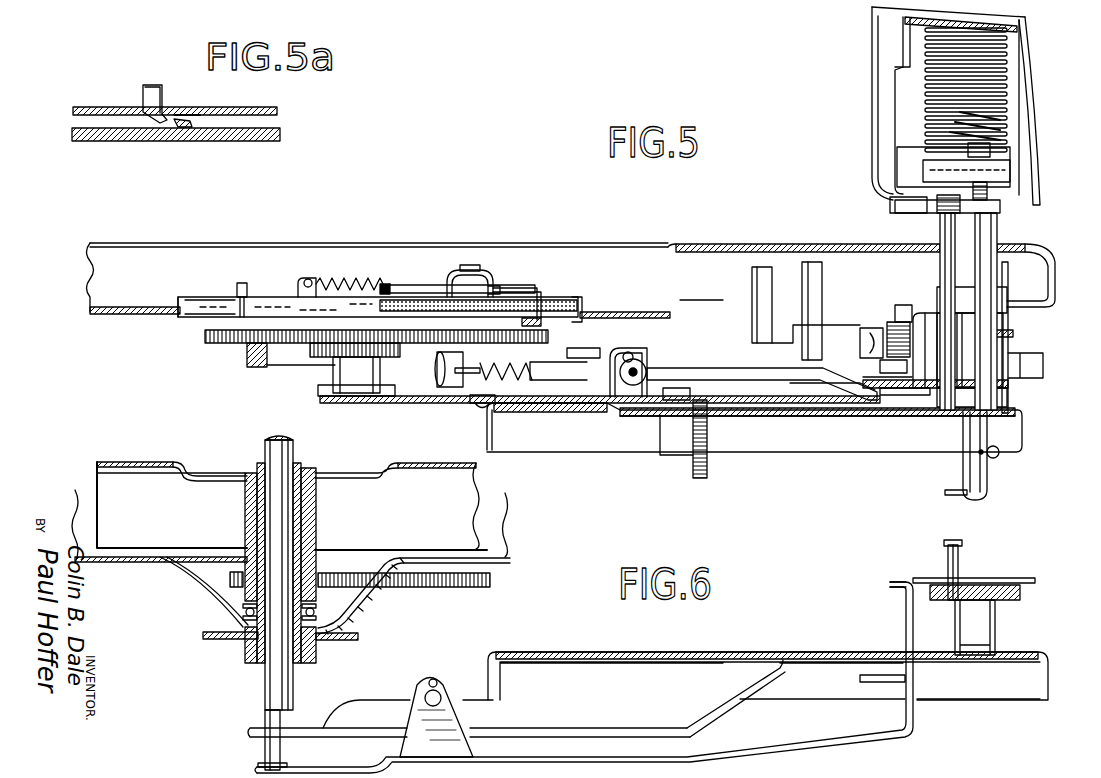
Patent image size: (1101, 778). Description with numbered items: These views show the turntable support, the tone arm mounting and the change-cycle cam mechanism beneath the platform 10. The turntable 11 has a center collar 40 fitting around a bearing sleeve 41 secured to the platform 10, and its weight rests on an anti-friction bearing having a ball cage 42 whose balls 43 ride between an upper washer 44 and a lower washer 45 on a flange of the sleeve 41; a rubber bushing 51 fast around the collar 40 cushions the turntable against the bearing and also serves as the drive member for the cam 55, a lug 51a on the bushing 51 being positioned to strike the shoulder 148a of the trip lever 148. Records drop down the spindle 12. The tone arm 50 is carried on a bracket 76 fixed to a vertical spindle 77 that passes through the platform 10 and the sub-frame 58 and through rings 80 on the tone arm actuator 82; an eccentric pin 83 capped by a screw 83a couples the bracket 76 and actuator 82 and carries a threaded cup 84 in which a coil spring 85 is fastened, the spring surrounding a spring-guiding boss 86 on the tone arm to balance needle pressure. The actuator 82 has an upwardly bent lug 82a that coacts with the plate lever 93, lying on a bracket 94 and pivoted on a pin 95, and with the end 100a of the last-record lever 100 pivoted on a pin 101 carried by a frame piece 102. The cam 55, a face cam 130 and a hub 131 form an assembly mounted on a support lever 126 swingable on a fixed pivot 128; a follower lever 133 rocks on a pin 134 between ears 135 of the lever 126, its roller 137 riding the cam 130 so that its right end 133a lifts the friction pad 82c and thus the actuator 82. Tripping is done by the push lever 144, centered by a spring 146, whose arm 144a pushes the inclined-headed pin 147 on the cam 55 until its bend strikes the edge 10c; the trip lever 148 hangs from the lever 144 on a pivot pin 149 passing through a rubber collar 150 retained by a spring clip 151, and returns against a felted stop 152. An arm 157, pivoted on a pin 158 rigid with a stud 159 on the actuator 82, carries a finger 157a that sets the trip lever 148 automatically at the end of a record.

In FIG. 5A, the platform 10 is at (268, 107).
In FIG. 5, the platform 10 is at (690, 245).
In FIG. 6, the platform 10 is at (507, 561).
In FIG. 5A, the edge 10c is at (193, 108).
In FIG. 6, the turntable 11 is at (150, 462).
In FIG. 6, the record spindle 12 is at (295, 453).
In FIG. 6, the center collar 40 is at (246, 519).
In FIG. 6, the bearing sleeve 41 is at (318, 513).
In FIG. 6, the ball cage 42 is at (322, 619).
In FIG. 6, the balls 43 is at (244, 621).
In FIG. 6, the upper washer 44 is at (243, 598).
In FIG. 6, the lower washer 45 is at (243, 639).
In FIG. 5, the tone arm 50 is at (872, 97).
In FIG. 6, the bushing 51 is at (335, 609).
In FIG. 6, the lug 51a is at (235, 565).
In FIG. 5A, the cam 55 is at (222, 141).
In FIG. 5, the cam 55 is at (215, 341).
In FIG. 6, the cam 55 is at (442, 589).
In FIG. 5, the sub-frame 58 is at (758, 447).
In FIG. 6, the sub-frame 58 is at (596, 652).
In FIG. 5, the bracket 76 is at (905, 201).
In FIG. 5, the vertical spindle 77 is at (945, 234).
In FIG. 5, the rings 80 is at (960, 299).
In FIG. 5, the tone arm actuator 82 is at (925, 313).
In FIG. 5, the lug 82a is at (1016, 365).
In FIG. 5, the friction pad 82c is at (908, 396).
In FIG. 5, the pin 83 is at (998, 234).
In FIG. 5, the screw 83a is at (990, 151).
In FIG. 5, the cup 84 is at (1005, 166).
In FIG. 5, the coil spring 85 is at (1005, 127).
In FIG. 5, the spring-guiding boss 86 is at (1002, 68).
In FIG. 6, the plate lever 93 is at (892, 589).
In FIG. 6, the bracket 94 is at (990, 606).
In FIG. 6, the pin 95 is at (958, 559).
In FIG. 6, the last-record lever 100 is at (778, 759).
In FIG. 5, the right hand portion 100a is at (1010, 338).
In FIG. 6, the right hand portion 100a is at (1025, 578).
In FIG. 6, the pin 101 is at (440, 679).
In FIG. 6, the frame piece 102 is at (382, 704).
In FIG. 5, the support lever 126 is at (403, 398).
In FIG. 5, the fixed pivot 128 is at (547, 396).
In FIG. 5, the face cam 130 is at (255, 367).
In FIG. 5, the hub 131 is at (326, 353).
In FIG. 5, the follower lever 133 is at (618, 358).
In FIG. 5, the right end 133a is at (855, 389).
In FIG. 5, the pin 134 is at (640, 372).
In FIG. 5, the ears 135 is at (646, 393).
In FIG. 5, the follower roller 137 is at (440, 367).
In FIG. 5, the push lever 144 is at (400, 292).
In FIG. 5A, the lever arm 144a is at (143, 93).
In FIG. 5, the lever arm 144a is at (538, 288).
In FIG. 5, the spring 146 is at (342, 280).
In FIG. 5A, the pin 147 is at (180, 118).
In FIG. 5, the pin 147 is at (522, 324).
In FIG. 5, the trip lever 148 is at (582, 305).
In FIG. 5, the shoulder 148a is at (245, 318).
In FIG. 5, the pivot pin 149 is at (470, 265).
In FIG. 5, the rubber collar 150 is at (449, 290).
In FIG. 5, the spring clip 151 is at (497, 288).
In FIG. 5, the felted stop 152 is at (243, 283).
In FIG. 5, the arm 157 is at (850, 327).
In FIG. 5, the vertical finger 157a is at (752, 281).
In FIG. 5, the pin 158 is at (900, 305).
In FIG. 5, the stud 159 is at (882, 367).